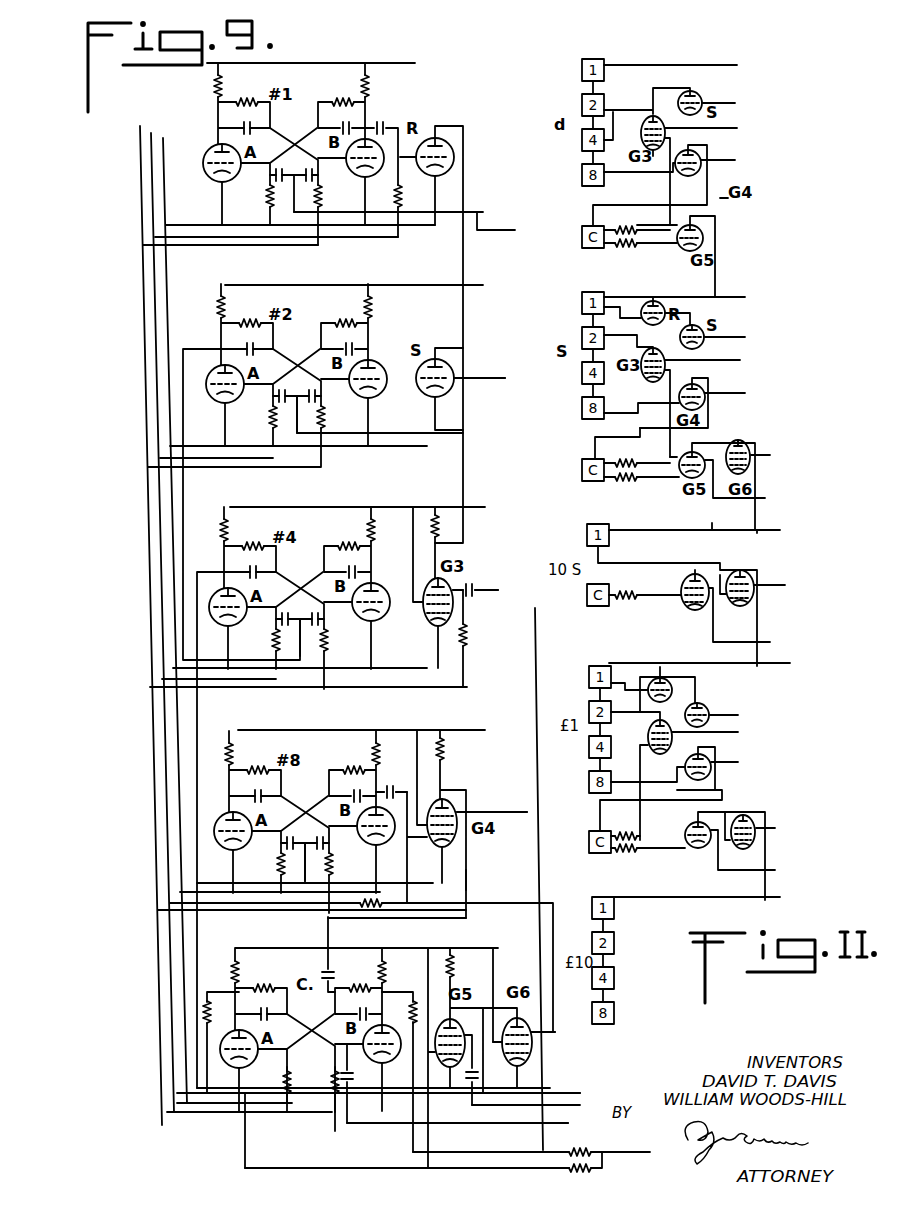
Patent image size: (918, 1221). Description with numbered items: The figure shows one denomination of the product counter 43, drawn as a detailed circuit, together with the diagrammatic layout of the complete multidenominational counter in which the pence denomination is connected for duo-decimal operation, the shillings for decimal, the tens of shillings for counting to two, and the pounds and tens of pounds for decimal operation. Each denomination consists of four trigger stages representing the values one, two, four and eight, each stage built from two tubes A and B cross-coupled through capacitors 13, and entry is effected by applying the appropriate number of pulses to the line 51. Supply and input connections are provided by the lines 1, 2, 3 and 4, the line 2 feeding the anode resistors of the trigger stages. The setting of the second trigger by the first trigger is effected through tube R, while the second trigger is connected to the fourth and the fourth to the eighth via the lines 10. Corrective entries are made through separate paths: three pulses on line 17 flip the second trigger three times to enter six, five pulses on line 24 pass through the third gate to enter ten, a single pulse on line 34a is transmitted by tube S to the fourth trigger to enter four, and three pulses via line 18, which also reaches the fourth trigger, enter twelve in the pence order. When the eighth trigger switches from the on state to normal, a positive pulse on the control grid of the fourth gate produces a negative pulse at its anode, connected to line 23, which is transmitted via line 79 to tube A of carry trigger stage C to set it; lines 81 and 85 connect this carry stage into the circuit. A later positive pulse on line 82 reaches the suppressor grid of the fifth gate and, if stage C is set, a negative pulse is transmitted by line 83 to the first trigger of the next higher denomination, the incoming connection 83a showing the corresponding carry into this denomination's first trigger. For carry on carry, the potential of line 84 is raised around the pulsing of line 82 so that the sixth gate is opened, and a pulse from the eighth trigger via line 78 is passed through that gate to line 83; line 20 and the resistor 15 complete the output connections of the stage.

In FIG. 9, the line 1 is at (166, 158).
In FIG. 9, the line 2 is at (394, 65).
In FIG. 9, the line 3 is at (139, 127).
In FIG. 9, the line 4 is at (152, 134).
In FIG. 9, the lines 10 is at (244, 718).
In FIG. 9, the capacitors 13 is at (299, 515).
In FIG. 9, the resistor 15 is at (612, 1152).
In FIG. 9, the line 17 is at (484, 382).
In FIG. 11, the line 17 is at (740, 337).
In FIG. 11, the line 18 is at (736, 130).
In FIG. 9, the line 20 is at (568, 1123).
In FIG. 9, the line 23 is at (487, 814).
In FIG. 11, the line 23 is at (738, 160).
In FIG. 9, the line 24 is at (522, 587).
In FIG. 11, the line 24 is at (735, 362).
In FIG. 11, the line 34a is at (735, 103).
In FIG. 9, the product counter 43 is at (340, 59).
In FIG. 9, the line 51 is at (489, 232).
In FIG. 11, the line 51 is at (712, 67).
In FIG. 9, the line 78 is at (561, 1072).
In FIG. 11, the line 78 is at (612, 426).
In FIG. 9, the line 79 is at (466, 880).
In FIG. 9, the line 81 is at (435, 1150).
In FIG. 11, the line 81 is at (660, 243).
In FIG. 9, the line 82 is at (572, 1107).
In FIG. 11, the line 82 is at (774, 496).
In FIG. 9, the line 83 is at (572, 1094).
In FIG. 11, the line 83 is at (715, 283).
In FIG. 9, the connection 83a is at (478, 212).
In FIG. 9, the line 84 is at (557, 1040).
In FIG. 11, the line 84 is at (778, 452).
In FIG. 9, the line 85 is at (535, 743).
In FIG. 11, the line 85 is at (666, 462).